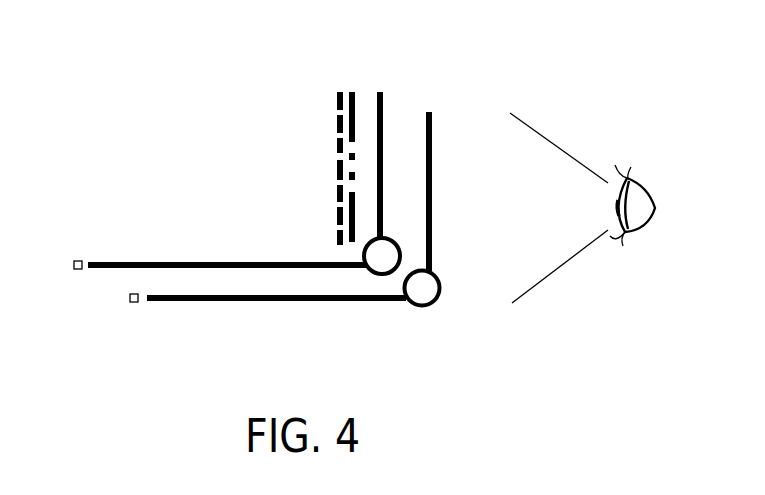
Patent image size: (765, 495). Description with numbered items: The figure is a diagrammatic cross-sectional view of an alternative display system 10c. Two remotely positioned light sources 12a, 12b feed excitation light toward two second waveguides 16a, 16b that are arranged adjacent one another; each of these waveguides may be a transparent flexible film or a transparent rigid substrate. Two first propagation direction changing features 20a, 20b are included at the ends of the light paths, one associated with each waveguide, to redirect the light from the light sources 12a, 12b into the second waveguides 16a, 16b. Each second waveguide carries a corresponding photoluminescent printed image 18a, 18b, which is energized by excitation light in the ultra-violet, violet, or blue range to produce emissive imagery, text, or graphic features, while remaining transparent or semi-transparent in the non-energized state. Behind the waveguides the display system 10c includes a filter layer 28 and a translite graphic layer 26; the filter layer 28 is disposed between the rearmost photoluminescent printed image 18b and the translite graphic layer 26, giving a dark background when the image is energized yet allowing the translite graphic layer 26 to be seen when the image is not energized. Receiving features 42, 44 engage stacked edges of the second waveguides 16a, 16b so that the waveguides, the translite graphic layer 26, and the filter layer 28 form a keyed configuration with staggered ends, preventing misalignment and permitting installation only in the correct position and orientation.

The display system 10c is at (483, 90).
The light source 12a is at (77, 260).
The light source 12b is at (129, 298).
The second waveguide 16a is at (432, 138).
The second waveguide 16b is at (385, 118).
The photoluminescent printed image 18a is at (431, 228).
The photoluminescent printed image 18b is at (384, 195).
The first propagation direction changing feature 20a is at (436, 287).
The first propagation direction changing feature 20b is at (368, 257).
The translite graphic layer 26 is at (338, 146).
The filter layer 28 is at (351, 92).
The receiving feature 42 is at (177, 261).
The receiving feature 44 is at (225, 303).